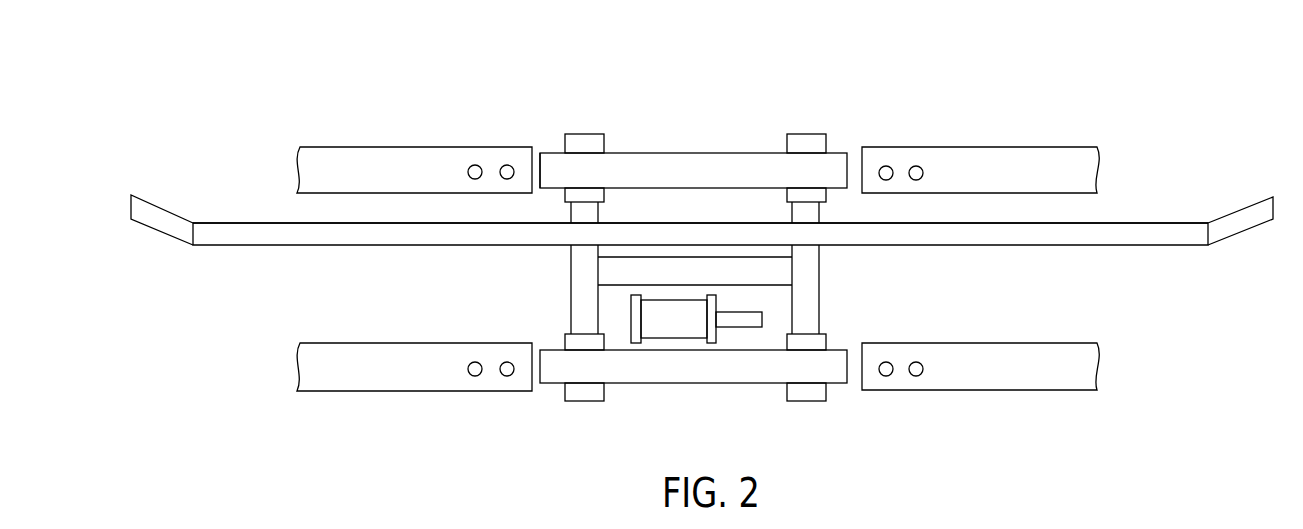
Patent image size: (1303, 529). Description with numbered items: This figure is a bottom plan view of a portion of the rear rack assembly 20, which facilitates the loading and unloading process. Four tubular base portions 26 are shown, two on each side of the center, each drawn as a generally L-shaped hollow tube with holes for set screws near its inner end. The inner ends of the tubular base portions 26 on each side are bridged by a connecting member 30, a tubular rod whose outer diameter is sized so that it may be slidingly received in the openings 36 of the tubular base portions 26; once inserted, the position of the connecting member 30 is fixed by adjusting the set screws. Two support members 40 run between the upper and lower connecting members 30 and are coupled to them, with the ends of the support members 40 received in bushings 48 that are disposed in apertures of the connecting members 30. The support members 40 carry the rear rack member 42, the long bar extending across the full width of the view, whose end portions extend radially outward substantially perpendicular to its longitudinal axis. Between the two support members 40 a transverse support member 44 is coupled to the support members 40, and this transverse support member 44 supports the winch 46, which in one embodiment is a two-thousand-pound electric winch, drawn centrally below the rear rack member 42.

The rear rack assembly 20 is at (304, 85).
The tubular base portions 26 is at (435, 146).
The connecting member 30 is at (747, 152).
The openings 36 is at (540, 149).
The support members 40 is at (820, 215).
The rear rack member 42 is at (1237, 210).
The transverse support member 44 is at (571, 308).
The winch 46 is at (711, 343).
The bushings 48 is at (605, 138).